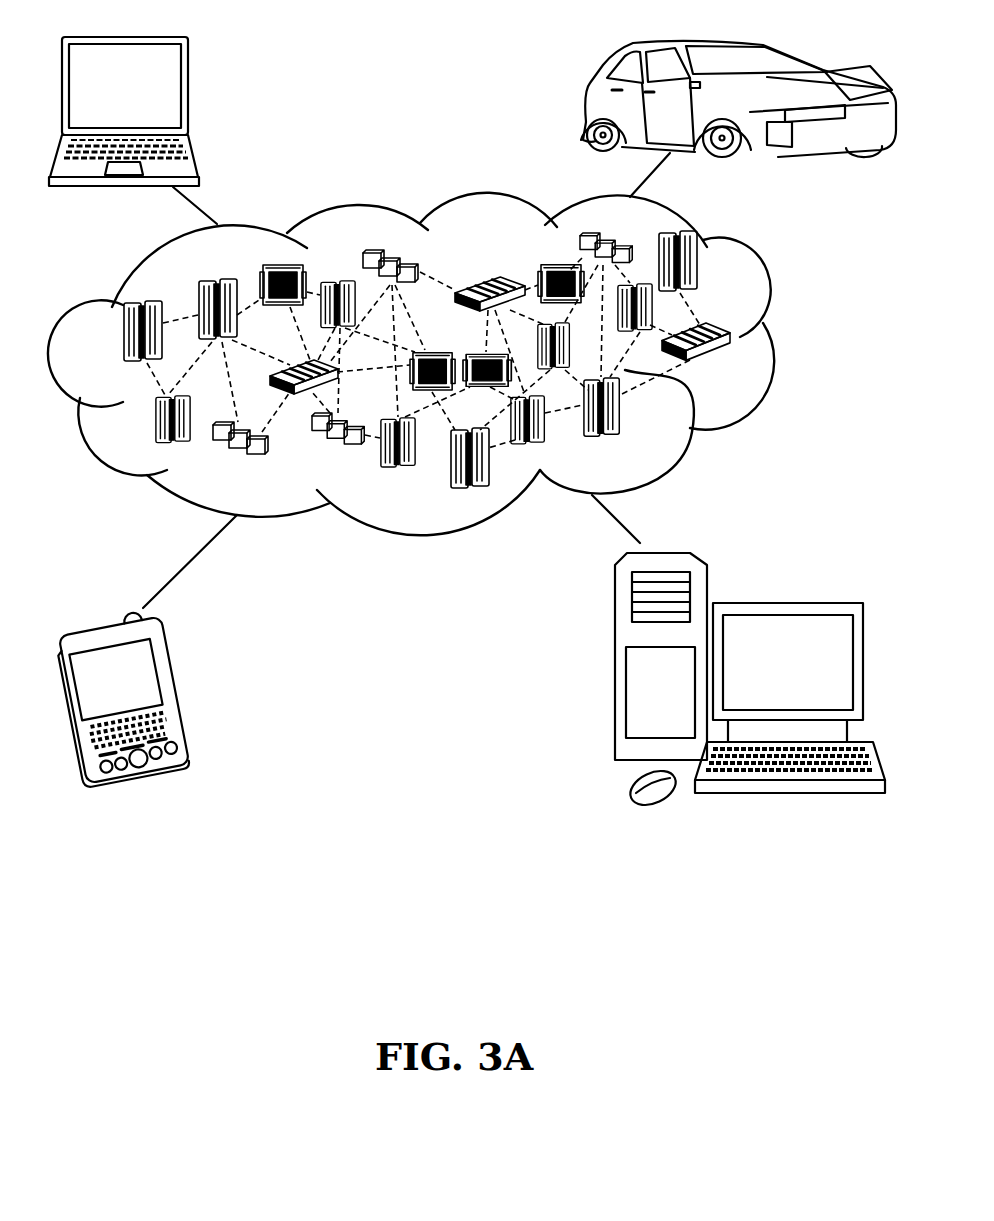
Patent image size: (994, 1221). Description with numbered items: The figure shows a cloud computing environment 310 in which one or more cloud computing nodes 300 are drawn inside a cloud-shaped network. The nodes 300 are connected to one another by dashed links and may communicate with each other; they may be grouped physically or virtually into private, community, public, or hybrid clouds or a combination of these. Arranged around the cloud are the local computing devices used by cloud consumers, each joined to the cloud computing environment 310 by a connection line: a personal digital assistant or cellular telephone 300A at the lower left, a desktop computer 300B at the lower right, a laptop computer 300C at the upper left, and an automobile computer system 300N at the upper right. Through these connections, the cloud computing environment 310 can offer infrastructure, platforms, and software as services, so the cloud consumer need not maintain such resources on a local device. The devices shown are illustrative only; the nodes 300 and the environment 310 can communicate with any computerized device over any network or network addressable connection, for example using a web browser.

The cloud computing nodes 300 is at (748, 373).
The cloud computing environment 310 is at (783, 338).
The personal digital assistant (PDA) or cellular telephone 300A is at (178, 690).
The desktop computer 300B is at (787, 603).
The laptop computer 300C is at (188, 92).
The automobile computer system 300N is at (588, 102).